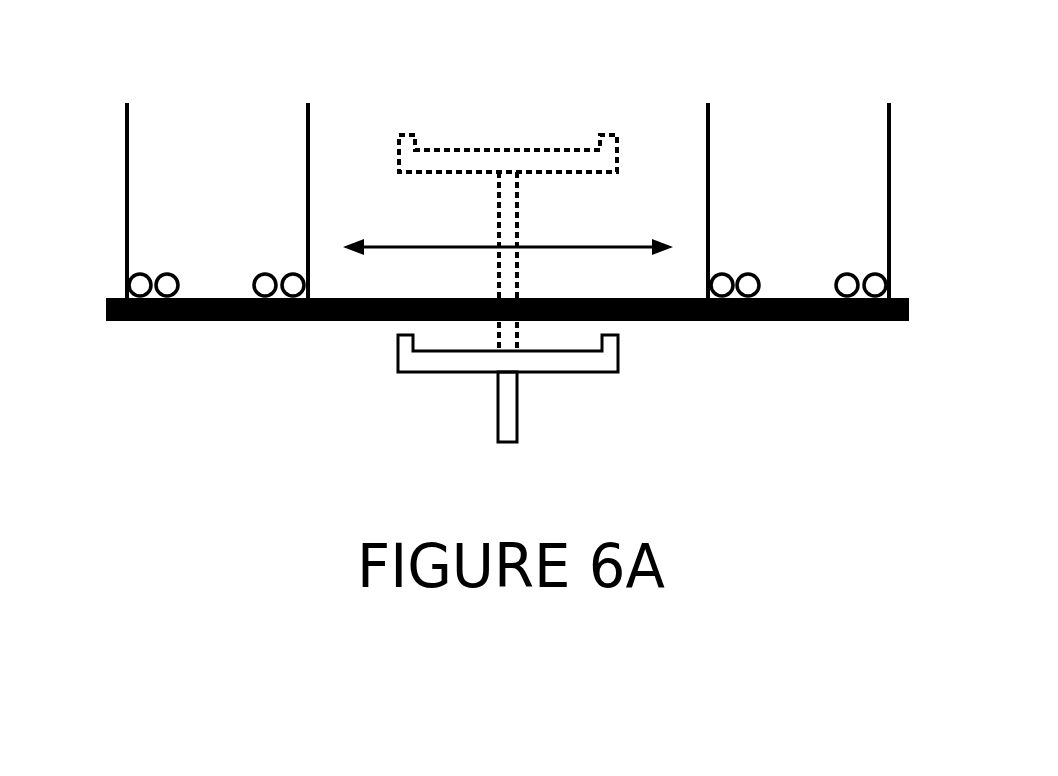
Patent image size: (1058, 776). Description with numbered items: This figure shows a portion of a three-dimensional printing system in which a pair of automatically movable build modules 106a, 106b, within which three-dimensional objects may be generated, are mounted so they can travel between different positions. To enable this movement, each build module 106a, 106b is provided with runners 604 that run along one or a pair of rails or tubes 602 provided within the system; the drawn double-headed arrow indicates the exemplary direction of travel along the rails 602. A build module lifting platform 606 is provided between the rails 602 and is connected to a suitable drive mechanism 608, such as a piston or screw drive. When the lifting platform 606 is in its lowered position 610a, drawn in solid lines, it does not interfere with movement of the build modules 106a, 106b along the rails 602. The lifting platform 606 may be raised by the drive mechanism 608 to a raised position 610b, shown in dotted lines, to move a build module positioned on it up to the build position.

The build module 106a is at (308, 192).
The build module 106b is at (708, 192).
The rail 602 is at (345, 322).
The runners 604 is at (140, 272).
The build module lifting platform 606 is at (435, 375).
The drive mechanism 608 is at (518, 405).
The lowered position 610a is at (521, 405).
The raised position 610b is at (527, 130).